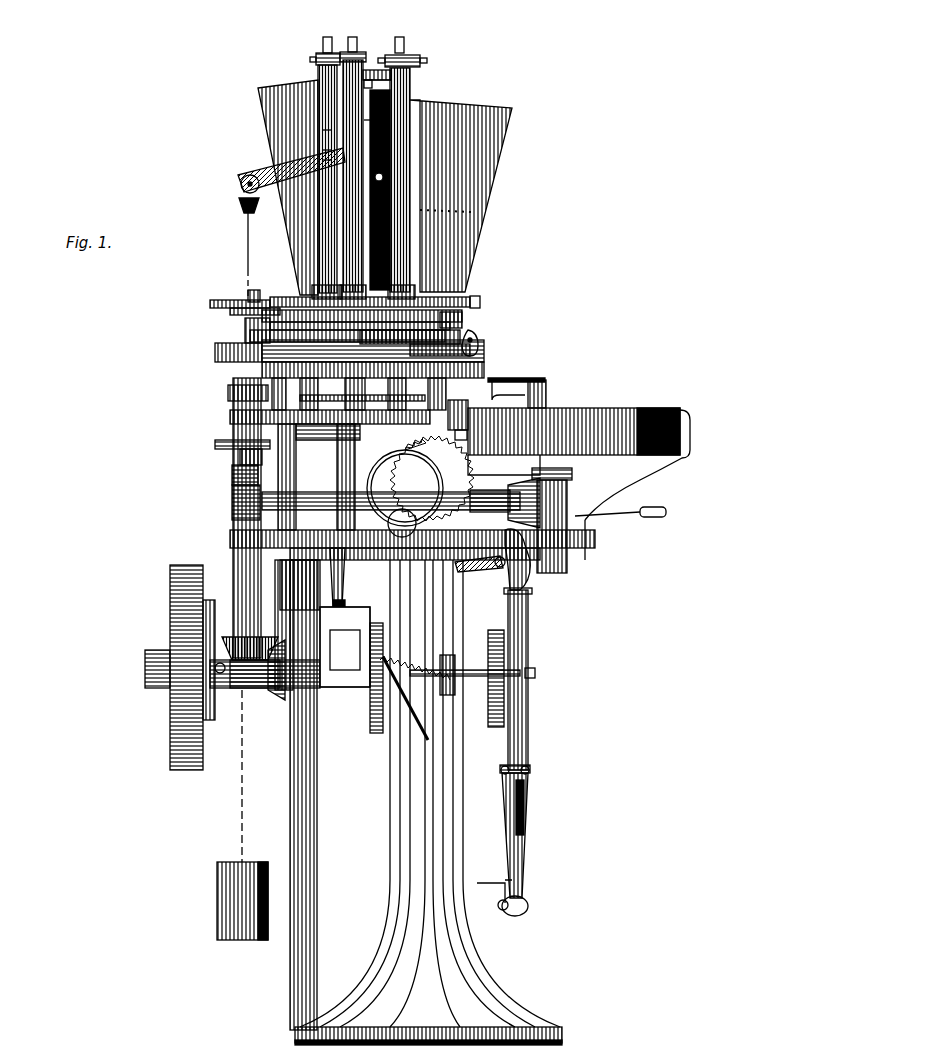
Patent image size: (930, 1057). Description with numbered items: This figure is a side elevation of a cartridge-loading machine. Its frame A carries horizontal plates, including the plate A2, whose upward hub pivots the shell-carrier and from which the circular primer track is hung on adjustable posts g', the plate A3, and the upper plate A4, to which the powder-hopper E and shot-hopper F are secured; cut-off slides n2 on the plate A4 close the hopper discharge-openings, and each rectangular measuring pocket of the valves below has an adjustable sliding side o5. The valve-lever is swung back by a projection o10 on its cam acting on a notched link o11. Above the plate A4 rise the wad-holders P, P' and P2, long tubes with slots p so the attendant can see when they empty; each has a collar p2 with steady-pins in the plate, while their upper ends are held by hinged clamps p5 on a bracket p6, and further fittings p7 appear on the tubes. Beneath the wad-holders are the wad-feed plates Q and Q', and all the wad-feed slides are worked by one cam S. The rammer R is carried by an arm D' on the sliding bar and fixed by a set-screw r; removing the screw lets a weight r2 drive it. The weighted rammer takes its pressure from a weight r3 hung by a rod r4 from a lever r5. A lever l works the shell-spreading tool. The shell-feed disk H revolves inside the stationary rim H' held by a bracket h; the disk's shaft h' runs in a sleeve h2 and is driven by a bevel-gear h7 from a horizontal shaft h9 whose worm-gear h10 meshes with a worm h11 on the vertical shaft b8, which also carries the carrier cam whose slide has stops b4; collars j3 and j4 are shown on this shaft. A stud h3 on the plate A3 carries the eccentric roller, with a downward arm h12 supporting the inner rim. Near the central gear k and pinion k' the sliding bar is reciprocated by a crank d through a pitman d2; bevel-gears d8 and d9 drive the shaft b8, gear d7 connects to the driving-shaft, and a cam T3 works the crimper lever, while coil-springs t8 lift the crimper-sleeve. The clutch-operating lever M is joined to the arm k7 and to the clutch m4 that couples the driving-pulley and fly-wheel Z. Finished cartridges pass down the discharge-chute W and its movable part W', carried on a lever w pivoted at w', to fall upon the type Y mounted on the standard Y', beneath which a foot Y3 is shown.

The powder-hopper E is at (288, 187).
The shot-hopper F is at (490, 142).
The wad-holder P' is at (275, 168).
The wad-holder P2 is at (345, 70).
The wad-holder P is at (414, 168).
The bracket p6 is at (376, 70).
The hinged clamps p5 is at (410, 62).
The bracket or arm D' is at (454, 190).
The set-screw r is at (383, 177).
The weight r2 is at (392, 134).
The rammer R is at (383, 232).
The pins p7 is at (360, 125).
The lever r5 is at (291, 170).
The rod r4 is at (247, 230).
The notched link or pawl o11 is at (210, 304).
The projection o10 is at (248, 299).
The sliding side or end o5 is at (232, 312).
The cut-off slides n2 is at (483, 302).
The frame-plate A4 is at (455, 310).
The collar p2 is at (410, 310).
The slots p is at (400, 318).
The wad-feed plate Q' is at (211, 330).
The wad-feed plate Q is at (444, 329).
The lever l is at (480, 340).
The cam S is at (215, 355).
The frame-plate A3 is at (486, 368).
The downwardly-projecting arm h12 is at (530, 378).
The stud or bracket h3 is at (548, 392).
The frame-plate A2 is at (230, 418).
The stop b4 is at (228, 392).
The vertical shaft b8 is at (240, 575).
The arm j4 is at (215, 446).
The collar j3 is at (240, 458).
The worm h11 is at (232, 478).
The worm-gear h10 is at (232, 503).
The adjustable posts or threaded bolts g' is at (319, 477).
The revolving shaft h' is at (480, 420).
The stationary rim or guard H' is at (579, 464).
The shell-feed disk H is at (539, 467).
The bracket h is at (552, 520).
The bevel-gear h7 is at (570, 482).
The horizontal shaft h9 is at (490, 500).
The clutch-operating lever M is at (612, 520).
The vertical sleeve or bearing h2 is at (575, 566).
The gear k is at (391, 481).
The pinion k' is at (402, 523).
The frame A is at (317, 800).
The pitman d2 is at (343, 588).
The crank d is at (326, 680).
The bevel-gear d9 is at (210, 640).
The bevel-gear d8 is at (270, 700).
The clutch m4 is at (222, 692).
The driving-pulley and fly-wheel Z is at (170, 705).
The cam T3 is at (385, 675).
The coil-springs t8 is at (415, 698).
The pivot w' is at (438, 668).
The horizontally-swinging lever w is at (486, 664).
The gear d7 is at (505, 705).
The arm k7 is at (482, 572).
The discharge-chute W is at (543, 564).
The movable part of the chute W' is at (544, 679).
The type or marker Y is at (535, 770).
The standard Y' is at (535, 835).
The foot Y3 is at (515, 880).
The weight r3 is at (230, 905).